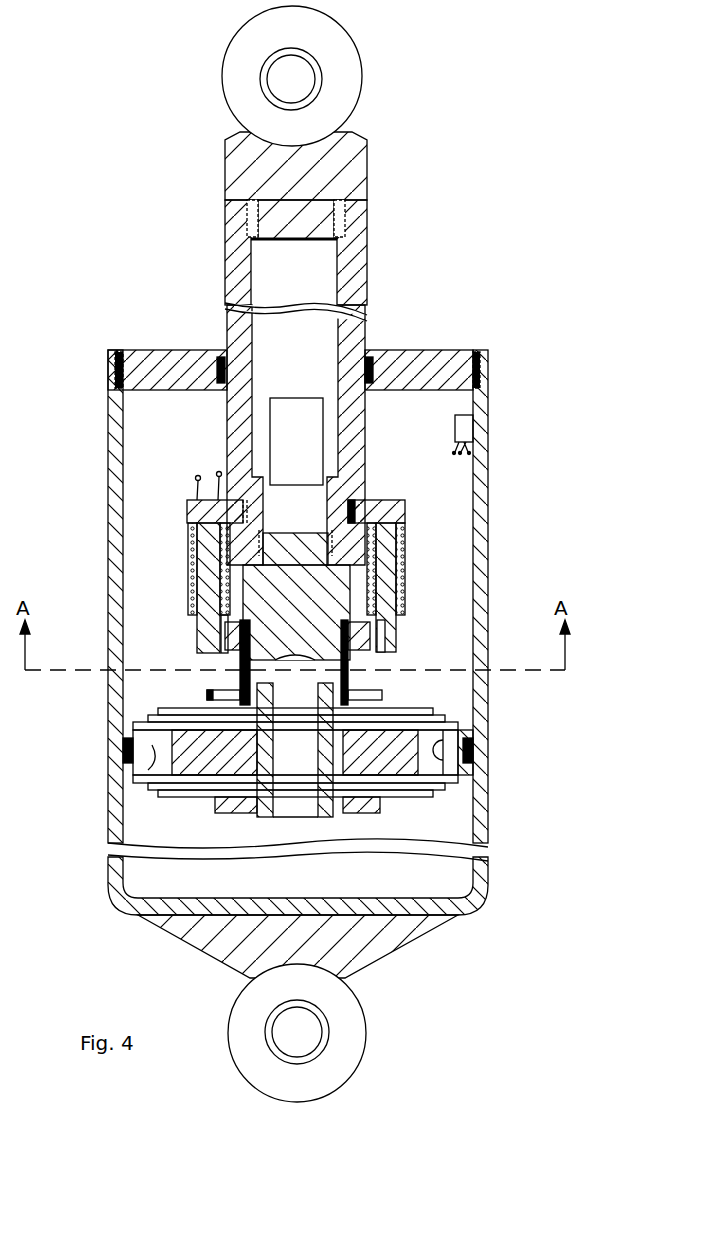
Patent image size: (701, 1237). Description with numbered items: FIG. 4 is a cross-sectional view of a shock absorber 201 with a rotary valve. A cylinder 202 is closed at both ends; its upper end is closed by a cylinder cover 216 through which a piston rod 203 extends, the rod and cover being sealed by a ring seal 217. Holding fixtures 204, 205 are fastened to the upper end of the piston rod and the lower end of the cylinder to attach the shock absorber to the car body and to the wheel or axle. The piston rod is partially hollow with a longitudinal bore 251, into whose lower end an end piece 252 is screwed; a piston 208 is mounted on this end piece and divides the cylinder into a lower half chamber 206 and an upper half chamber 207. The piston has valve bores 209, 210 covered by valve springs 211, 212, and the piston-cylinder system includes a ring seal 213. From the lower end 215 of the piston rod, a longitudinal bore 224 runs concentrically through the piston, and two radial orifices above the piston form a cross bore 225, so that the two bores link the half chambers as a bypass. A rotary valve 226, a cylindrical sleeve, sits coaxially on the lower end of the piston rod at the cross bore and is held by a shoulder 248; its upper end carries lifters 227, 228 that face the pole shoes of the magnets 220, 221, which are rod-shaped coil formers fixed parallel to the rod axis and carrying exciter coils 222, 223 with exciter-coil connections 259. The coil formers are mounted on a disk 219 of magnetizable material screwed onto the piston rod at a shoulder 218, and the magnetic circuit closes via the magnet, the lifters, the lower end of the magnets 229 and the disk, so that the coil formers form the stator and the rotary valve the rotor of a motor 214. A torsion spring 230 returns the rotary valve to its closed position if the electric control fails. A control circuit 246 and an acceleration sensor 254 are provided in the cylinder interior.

The shock absorber 201 is at (462, 333).
The cylinder 202 is at (486, 570).
The piston rod 203 is at (353, 278).
The holding fixture 204 is at (323, 28).
The holding fixture 205 is at (355, 1040).
The lower half chamber 206 is at (305, 888).
The upper half chamber 207 is at (162, 436).
The piston 208 is at (402, 746).
The valve bore 209 is at (440, 745).
The valve bore 210 is at (152, 772).
The valve spring 211 is at (134, 713).
The valve spring 212 is at (462, 830).
The ring seal 213 is at (470, 750).
The motor 214 is at (232, 815).
The lower end of piston rod 215 is at (268, 818).
The cylinder cover 216 is at (157, 362).
The ring seal 217 is at (375, 352).
The shoulder 218 is at (356, 500).
The disk 219 is at (396, 515).
The magnet 220 is at (205, 590).
The magnet 221 is at (388, 605).
The exciter coil 222 is at (188, 552).
The exciter coil 223 is at (398, 565).
The longitudinal bore 224 is at (278, 756).
The cross bore 225 is at (262, 694).
The rotary valve 226 is at (240, 677).
The lifter 227 is at (232, 655).
The lifter 228 is at (350, 660).
The lower end of magnets 229 is at (392, 636).
The torsion spring 230 is at (207, 694).
The control circuit 246 is at (315, 449).
The shoulder 248 is at (296, 612).
The bore 251 is at (250, 270).
The end piece 252 is at (290, 548).
The acceleration sensor 254 is at (456, 433).
The exciter-coil connections 259 is at (216, 470).